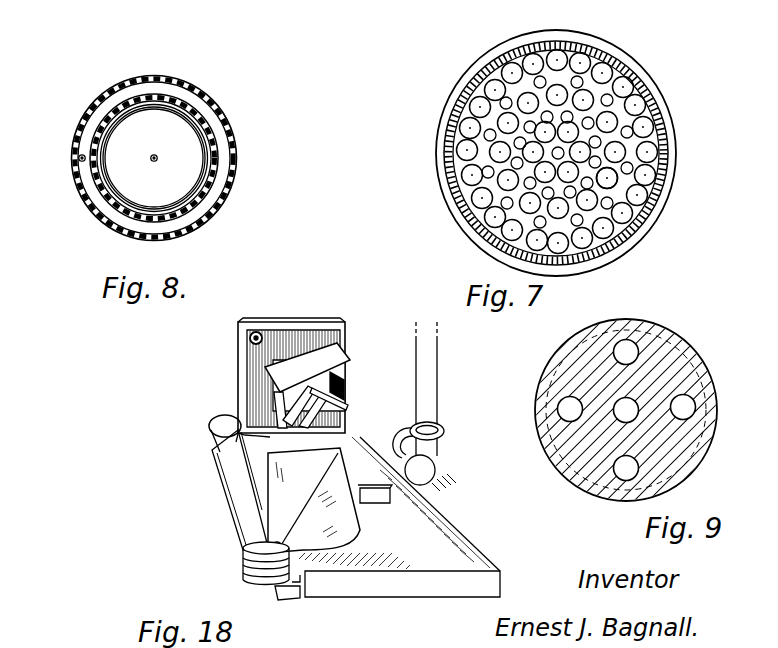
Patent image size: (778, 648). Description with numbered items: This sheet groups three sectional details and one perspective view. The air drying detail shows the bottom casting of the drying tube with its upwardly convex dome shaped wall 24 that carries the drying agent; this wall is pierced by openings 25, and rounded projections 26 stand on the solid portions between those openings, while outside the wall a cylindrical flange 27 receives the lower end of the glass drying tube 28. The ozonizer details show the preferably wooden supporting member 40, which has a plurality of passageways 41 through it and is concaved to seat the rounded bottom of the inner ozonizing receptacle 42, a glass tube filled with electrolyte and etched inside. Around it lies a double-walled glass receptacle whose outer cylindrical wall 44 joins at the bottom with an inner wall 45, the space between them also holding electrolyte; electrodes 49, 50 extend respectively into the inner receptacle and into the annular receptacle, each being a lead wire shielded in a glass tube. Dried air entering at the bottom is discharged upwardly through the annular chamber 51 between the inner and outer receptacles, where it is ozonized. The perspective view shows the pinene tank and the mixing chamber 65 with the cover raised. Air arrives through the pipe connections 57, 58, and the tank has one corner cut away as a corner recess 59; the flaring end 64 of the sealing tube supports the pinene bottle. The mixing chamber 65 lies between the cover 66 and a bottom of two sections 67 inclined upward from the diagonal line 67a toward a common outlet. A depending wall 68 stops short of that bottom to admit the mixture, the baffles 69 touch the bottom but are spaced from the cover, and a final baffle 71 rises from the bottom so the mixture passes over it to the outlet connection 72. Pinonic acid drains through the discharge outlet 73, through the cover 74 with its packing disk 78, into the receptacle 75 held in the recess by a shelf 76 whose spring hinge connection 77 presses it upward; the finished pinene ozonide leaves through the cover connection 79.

In FIG. 7, the dome shaped wall 24 is at (616, 181).
In FIG. 7, the openings 25 is at (637, 107).
In FIG. 7, the rounded projections 26 is at (580, 76).
In FIG. 7, the cylindrical flange 27 is at (673, 177).
In FIG. 7, the drying tube 28 is at (670, 146).
In FIG. 9, the supporting member 40 is at (665, 362).
In FIG. 9, the passageways 41 is at (626, 351).
In FIG. 8, the inner ozonizing receptacle 42 is at (208, 176).
In FIG. 8, the outer cylindrical wall 44 is at (224, 114).
In FIG. 8, the inner wall 45 is at (214, 135).
In FIG. 8, the electrode 49 is at (180, 146).
In FIG. 8, the electrode 50 is at (79, 158).
In FIG. 8, the annular chamber 51 is at (208, 153).
In FIG. 18, the pipe connection 57 is at (440, 393).
In FIG. 18, the pipe connection 58 is at (424, 448).
In FIG. 18, the corner recess 59 is at (318, 585).
In FIG. 18, the flaring end 64 is at (209, 427).
In FIG. 18, the mixing chamber 65 is at (354, 498).
In FIG. 18, the cover 66 is at (283, 343).
In FIG. 18, the bottom sections 67 is at (299, 493).
In FIG. 18, the diagonal line 67a is at (318, 503).
In FIG. 18, the wall 68 is at (273, 394).
In FIG. 18, the baffles 69 is at (300, 400).
In FIG. 18, the final baffle 71 is at (346, 411).
In FIG. 18, the outlet connection 72 is at (338, 383).
In FIG. 18, the discharge outlet 73 is at (278, 542).
In FIG. 18, the cover 74 is at (252, 552).
In FIG. 18, the receptacle 75 is at (255, 580).
In FIG. 18, the shelf 76 is at (283, 598).
In FIG. 18, the spring hinge connection 77 is at (297, 603).
In FIG. 18, the packing disk 78 is at (250, 567).
In FIG. 18, the cover connection 79 is at (250, 336).